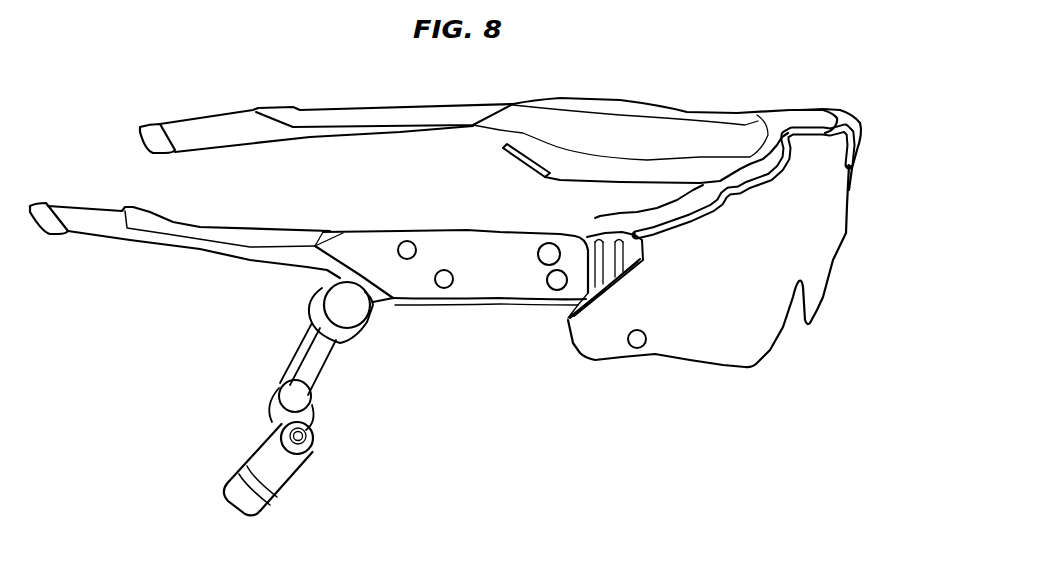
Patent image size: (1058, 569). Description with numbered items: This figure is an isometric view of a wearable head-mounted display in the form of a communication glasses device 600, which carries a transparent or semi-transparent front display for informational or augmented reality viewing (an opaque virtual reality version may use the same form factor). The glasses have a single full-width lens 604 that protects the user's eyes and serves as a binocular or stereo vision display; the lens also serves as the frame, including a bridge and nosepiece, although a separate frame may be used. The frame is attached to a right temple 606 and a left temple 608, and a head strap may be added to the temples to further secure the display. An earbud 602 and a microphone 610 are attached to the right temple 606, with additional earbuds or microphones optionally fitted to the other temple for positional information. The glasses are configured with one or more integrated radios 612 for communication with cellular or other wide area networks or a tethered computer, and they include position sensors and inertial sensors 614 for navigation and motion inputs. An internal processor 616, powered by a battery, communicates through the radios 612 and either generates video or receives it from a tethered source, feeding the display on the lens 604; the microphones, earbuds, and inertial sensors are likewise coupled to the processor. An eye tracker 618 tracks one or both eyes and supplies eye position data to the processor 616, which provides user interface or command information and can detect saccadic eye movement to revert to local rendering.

The communication glasses device 600 is at (760, 404).
The earbud 602 is at (297, 463).
The lens 604 is at (845, 230).
The right temple 606 is at (670, 123).
The left temple 608 is at (247, 265).
The microphone 610 is at (447, 281).
The integrated radios 612 is at (557, 281).
The position sensors and inertial sensors 614 is at (548, 254).
The internal processor 616 is at (399, 244).
The eye tracker 618 is at (637, 340).